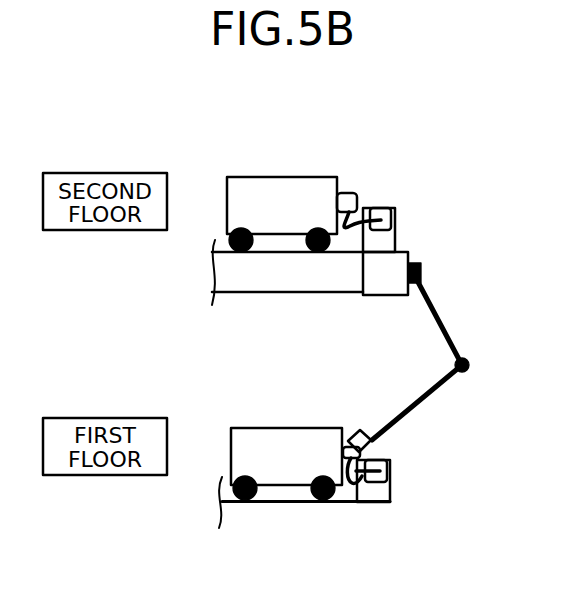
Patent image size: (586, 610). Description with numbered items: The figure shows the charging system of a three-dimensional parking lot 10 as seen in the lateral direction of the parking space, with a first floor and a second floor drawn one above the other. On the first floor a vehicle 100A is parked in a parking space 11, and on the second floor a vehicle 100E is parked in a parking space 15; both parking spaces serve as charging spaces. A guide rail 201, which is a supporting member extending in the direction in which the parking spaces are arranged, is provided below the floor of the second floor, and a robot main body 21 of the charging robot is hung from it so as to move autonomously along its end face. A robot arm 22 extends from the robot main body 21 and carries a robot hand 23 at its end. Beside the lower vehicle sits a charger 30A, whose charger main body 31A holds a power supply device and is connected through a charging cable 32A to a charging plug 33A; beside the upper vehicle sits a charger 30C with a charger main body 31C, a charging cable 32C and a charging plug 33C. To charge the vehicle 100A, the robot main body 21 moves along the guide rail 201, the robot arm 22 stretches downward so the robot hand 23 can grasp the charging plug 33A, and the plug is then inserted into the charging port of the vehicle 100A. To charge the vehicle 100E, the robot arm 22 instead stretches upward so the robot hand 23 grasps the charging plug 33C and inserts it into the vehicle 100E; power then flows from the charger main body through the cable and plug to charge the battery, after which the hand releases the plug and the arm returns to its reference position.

The parking lot 10 is at (150, 128).
The parking space 15 is at (296, 142).
The vehicle 100E is at (268, 178).
The vehicle 100A is at (275, 427).
The guide rail 201 is at (250, 282).
The parking space 11 is at (276, 524).
The robot main body 21 is at (383, 297).
The robot arm 22 is at (438, 392).
The robot hand 23 is at (357, 428).
The charger 30C is at (424, 209).
The charger main body 31C is at (397, 230).
The charging cable 32C is at (372, 240).
The charging plug 33C is at (346, 193).
The charger 30A is at (424, 510).
The charger main body 31A is at (392, 493).
The charging cable 32A is at (382, 503).
The charging plug 33A is at (352, 470).